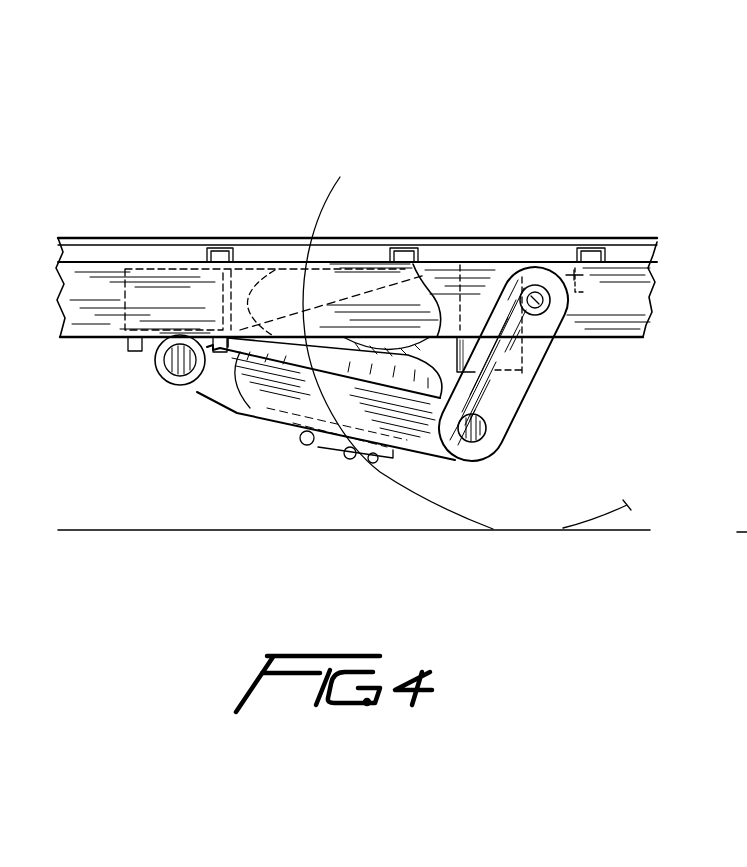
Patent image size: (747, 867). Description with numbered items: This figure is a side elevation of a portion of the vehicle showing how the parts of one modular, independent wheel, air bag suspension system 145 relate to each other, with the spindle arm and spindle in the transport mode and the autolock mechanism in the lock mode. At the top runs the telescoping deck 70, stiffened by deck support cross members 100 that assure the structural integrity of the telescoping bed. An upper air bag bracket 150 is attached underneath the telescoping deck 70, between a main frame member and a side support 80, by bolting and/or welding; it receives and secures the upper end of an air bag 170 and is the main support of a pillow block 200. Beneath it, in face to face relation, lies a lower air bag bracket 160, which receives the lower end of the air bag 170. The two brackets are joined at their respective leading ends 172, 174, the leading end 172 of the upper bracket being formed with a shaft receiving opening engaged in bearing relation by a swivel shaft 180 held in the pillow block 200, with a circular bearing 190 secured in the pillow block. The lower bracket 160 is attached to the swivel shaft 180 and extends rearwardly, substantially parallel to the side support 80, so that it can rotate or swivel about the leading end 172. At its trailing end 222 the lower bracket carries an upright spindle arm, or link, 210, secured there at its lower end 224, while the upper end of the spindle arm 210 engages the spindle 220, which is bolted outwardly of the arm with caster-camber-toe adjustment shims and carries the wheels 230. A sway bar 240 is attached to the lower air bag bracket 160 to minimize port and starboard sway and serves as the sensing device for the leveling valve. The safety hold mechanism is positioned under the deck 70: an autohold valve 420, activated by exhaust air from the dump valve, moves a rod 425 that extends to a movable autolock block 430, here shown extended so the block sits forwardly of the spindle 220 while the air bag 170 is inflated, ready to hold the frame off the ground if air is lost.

The telescoping deck 70 is at (93, 237).
The side support 80 is at (630, 328).
The deck support cross members 100 is at (598, 243).
The modular, independent wheel, air bag suspension system 145 is at (461, 468).
The upper air bag bracket 150 is at (246, 283).
The lower air bag bracket 160 is at (250, 415).
The air bag 170 is at (425, 300).
The leading end of upper bracket 172 is at (150, 320).
The leading end of lower bracket 174 is at (207, 395).
The swivel shaft 180 is at (165, 355).
The circular bearing 190 is at (150, 320).
The pillow block 200 is at (178, 392).
The spindle arm 210 is at (510, 400).
The spindle 220 is at (543, 312).
The trailing end of lower bracket 222 is at (430, 445).
The lower end of spindle arm 224 is at (487, 452).
The wheels 230 is at (372, 174).
The sway bar 240 is at (312, 447).
The autohold valve 420 is at (652, 278).
The rod 425 is at (580, 295).
The autolock block 430 is at (500, 265).